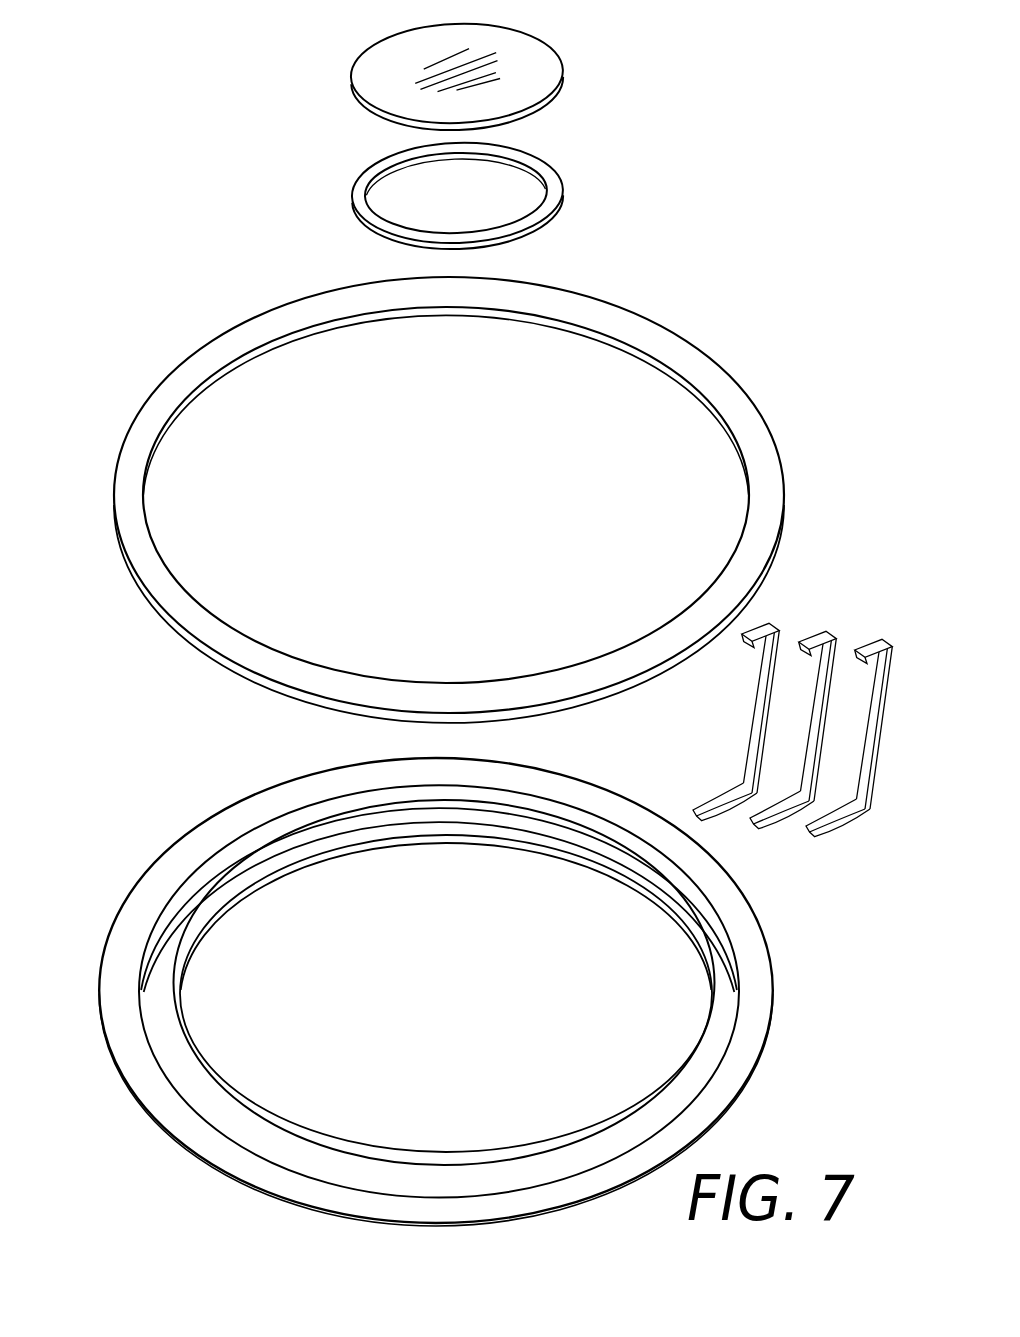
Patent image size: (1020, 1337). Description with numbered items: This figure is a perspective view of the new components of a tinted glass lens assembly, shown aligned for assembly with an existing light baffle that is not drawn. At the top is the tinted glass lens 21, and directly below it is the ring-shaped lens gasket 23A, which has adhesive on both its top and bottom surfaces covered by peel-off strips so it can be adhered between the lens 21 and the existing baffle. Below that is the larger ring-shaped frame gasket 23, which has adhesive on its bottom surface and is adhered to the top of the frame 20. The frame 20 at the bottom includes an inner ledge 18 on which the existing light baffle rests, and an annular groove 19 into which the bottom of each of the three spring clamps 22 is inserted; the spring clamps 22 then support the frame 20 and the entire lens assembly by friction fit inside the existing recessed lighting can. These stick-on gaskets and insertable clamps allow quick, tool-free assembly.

The inner ledge 18 is at (243, 877).
The annular groove 19 is at (325, 823).
The frame 20 is at (429, 992).
The lens 21 is at (507, 50).
The spring clamps 22 is at (778, 631).
The frame gasket 23 is at (137, 428).
The lens gasket 23A is at (354, 196).